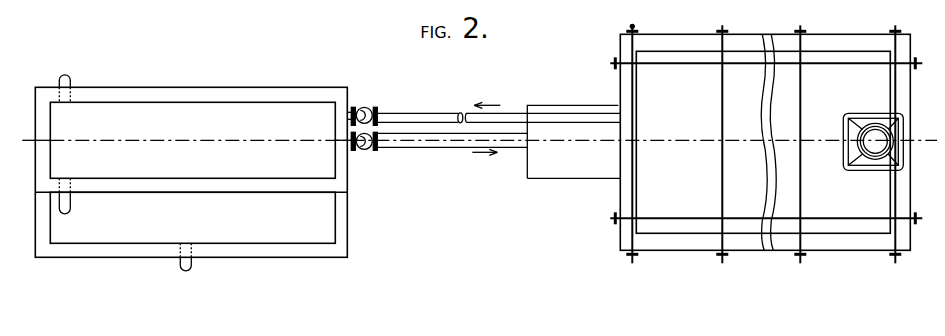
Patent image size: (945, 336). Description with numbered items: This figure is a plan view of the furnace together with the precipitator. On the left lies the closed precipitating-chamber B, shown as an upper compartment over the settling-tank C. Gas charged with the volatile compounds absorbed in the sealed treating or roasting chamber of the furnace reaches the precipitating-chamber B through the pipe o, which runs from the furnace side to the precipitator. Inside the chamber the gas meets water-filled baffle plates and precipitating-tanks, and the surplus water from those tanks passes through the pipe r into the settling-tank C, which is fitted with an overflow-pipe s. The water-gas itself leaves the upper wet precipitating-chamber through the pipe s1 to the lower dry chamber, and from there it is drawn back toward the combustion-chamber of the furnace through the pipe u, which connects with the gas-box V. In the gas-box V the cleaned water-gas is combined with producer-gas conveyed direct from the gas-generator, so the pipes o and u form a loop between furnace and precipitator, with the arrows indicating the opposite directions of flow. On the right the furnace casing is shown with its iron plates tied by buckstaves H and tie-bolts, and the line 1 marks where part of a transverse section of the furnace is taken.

The closed precipitating-chamber B is at (192, 140).
The settling-tank C is at (192, 217).
The pipe s1 is at (70, 80).
The pipe r is at (70, 206).
The overflow-pipe s is at (191, 264).
The pipe o is at (452, 109).
The pipe u is at (437, 149).
The gas-box V is at (573, 141).
The line 1 1 is at (722, 76).
The buckstaves H is at (640, 31).